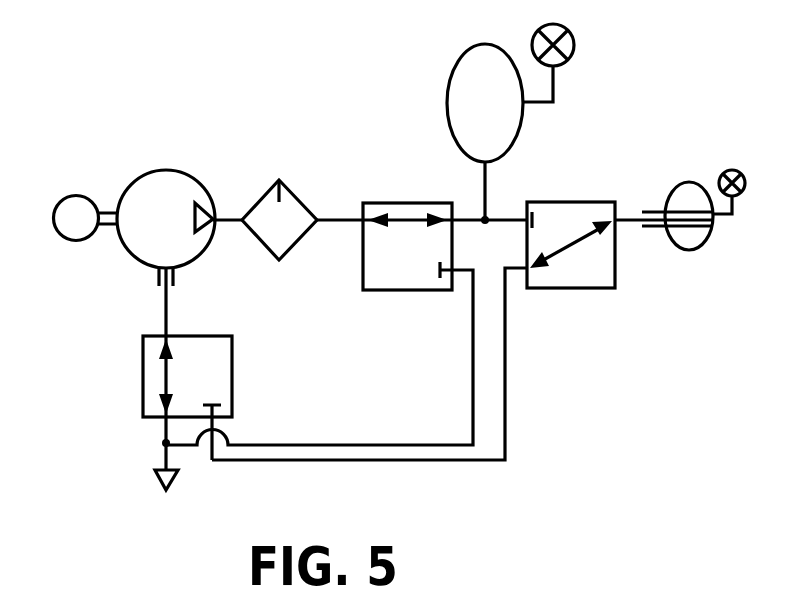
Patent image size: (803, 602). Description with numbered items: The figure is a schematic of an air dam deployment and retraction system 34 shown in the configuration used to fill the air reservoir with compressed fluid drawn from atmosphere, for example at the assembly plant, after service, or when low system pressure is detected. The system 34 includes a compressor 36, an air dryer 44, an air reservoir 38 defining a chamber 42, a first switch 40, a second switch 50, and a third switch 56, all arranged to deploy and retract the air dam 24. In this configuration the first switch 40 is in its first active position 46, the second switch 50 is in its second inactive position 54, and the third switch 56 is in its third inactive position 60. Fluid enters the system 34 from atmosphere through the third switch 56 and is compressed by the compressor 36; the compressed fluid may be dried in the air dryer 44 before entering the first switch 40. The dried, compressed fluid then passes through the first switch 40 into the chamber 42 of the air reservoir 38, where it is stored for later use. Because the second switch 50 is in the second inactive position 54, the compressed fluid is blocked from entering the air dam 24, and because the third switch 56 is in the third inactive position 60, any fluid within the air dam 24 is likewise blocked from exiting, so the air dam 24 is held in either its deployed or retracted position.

The air dam deployment and retraction system 34 is at (160, 100).
The compressor 36 is at (135, 219).
The air dryer 44 is at (279, 220).
The first active position 46 is at (392, 194).
The first switch 40 is at (383, 262).
The air reservoir 38 is at (487, 93).
The chamber 42 is at (452, 109).
The second inactive position 54 is at (586, 186).
The second switch 50 is at (572, 268).
The air dam 24 is at (690, 193).
The third inactive position 60 is at (124, 360).
The third switch 56 is at (215, 370).